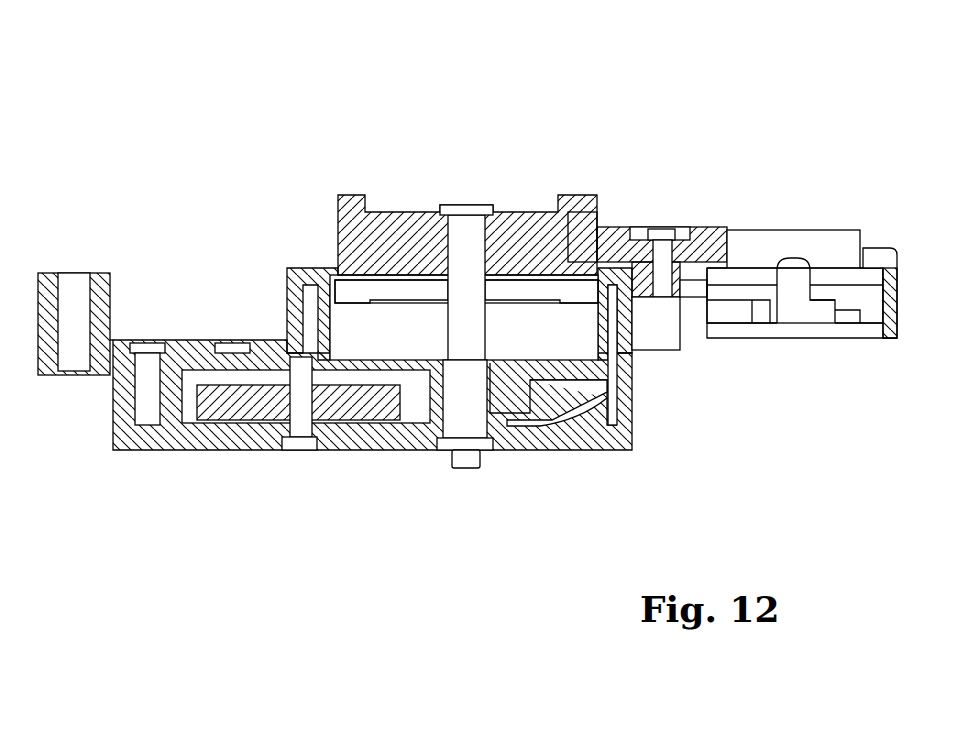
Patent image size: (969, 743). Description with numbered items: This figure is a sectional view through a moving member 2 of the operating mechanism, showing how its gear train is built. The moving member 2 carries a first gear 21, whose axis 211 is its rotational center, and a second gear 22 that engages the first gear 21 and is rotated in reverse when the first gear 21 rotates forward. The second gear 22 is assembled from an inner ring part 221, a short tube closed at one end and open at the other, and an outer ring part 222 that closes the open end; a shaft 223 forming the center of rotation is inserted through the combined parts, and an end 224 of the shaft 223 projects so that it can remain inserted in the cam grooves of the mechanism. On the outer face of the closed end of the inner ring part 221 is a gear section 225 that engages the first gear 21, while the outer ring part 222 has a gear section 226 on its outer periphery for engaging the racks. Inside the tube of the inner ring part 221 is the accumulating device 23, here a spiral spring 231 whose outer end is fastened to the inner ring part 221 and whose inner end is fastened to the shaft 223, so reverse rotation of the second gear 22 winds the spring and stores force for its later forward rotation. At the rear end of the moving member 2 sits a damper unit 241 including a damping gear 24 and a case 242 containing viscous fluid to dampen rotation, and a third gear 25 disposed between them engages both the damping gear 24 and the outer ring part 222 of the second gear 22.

The moving member 2 is at (567, 108).
The first gear 21 is at (232, 407).
The axis of first gear 211 is at (298, 402).
The second gear 22 is at (520, 232).
The inner ring part 221 is at (533, 385).
The outer ring part 222 is at (580, 227).
The shaft 223 is at (462, 412).
The end of rotational shaft 224 is at (470, 460).
The gear section 225 is at (603, 450).
The gear section 226 is at (338, 232).
The accumulating device 23 is at (398, 323).
The spiral spring 231 is at (466, 291).
The damping gear 24 is at (773, 245).
The damper unit 241 is at (733, 307).
The case 242 is at (846, 311).
The third gear 25 is at (720, 232).